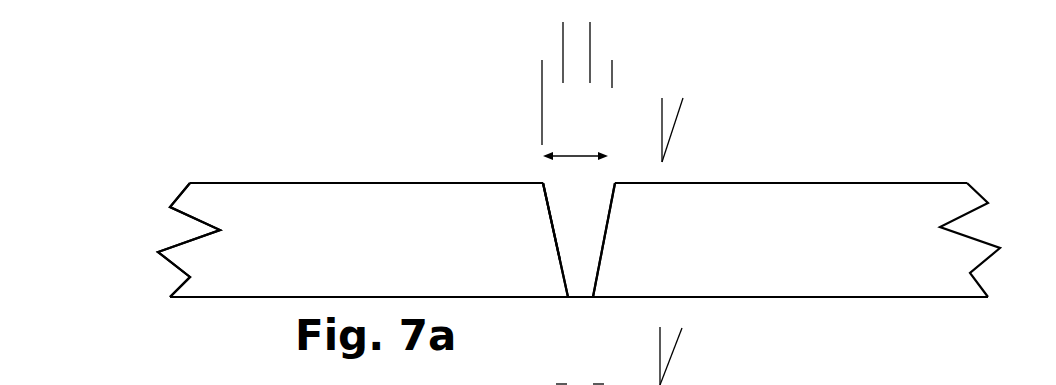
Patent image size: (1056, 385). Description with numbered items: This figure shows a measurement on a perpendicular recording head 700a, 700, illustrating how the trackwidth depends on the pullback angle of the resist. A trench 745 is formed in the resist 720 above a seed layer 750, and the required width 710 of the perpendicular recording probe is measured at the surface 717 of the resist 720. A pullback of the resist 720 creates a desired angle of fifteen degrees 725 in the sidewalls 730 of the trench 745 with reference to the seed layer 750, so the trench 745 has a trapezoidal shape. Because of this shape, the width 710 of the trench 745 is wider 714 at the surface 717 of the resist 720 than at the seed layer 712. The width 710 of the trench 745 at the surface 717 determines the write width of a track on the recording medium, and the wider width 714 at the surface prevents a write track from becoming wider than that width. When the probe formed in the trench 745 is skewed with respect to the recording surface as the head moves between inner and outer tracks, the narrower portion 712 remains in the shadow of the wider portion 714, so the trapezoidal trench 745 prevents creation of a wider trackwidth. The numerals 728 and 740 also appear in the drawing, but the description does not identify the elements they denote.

The perpendicular recording head 700a is at (939, 78).
The perpendicular recording head 700 is at (1003, 378).
The required width 710 is at (577, 133).
The seed layer width 712 is at (630, 32).
The wider width 714 is at (670, 66).
The surface 717 is at (341, 176).
The resist 720 is at (875, 182).
The angle of 15 degrees 725 is at (683, 98).
The groove bottom width b 728 is at (583, 357).
The sidewalls 730 is at (601, 223).
The hard mask 740 is at (831, 375).
The trench 745 is at (553, 182).
The seed layer 750 is at (190, 298).